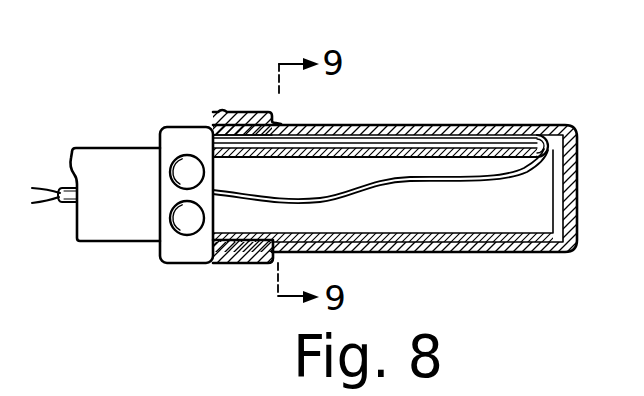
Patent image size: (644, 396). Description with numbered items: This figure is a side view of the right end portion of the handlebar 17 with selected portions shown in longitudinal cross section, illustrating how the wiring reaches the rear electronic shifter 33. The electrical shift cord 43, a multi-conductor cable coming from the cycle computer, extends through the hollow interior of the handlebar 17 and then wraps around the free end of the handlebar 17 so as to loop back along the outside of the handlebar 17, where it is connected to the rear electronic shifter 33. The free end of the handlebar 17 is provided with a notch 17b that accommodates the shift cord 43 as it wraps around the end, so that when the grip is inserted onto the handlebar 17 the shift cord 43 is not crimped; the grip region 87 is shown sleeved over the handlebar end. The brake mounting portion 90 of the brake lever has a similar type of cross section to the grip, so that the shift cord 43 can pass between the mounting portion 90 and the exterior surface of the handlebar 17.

The handlebar 17 is at (121, 253).
The notch 17b is at (579, 147).
The rear electronic shifter 33 is at (184, 117).
The electrical shift cord 43 is at (427, 188).
The heater sheath element 87 is at (440, 117).
The brake mounting portion 90 is at (232, 264).